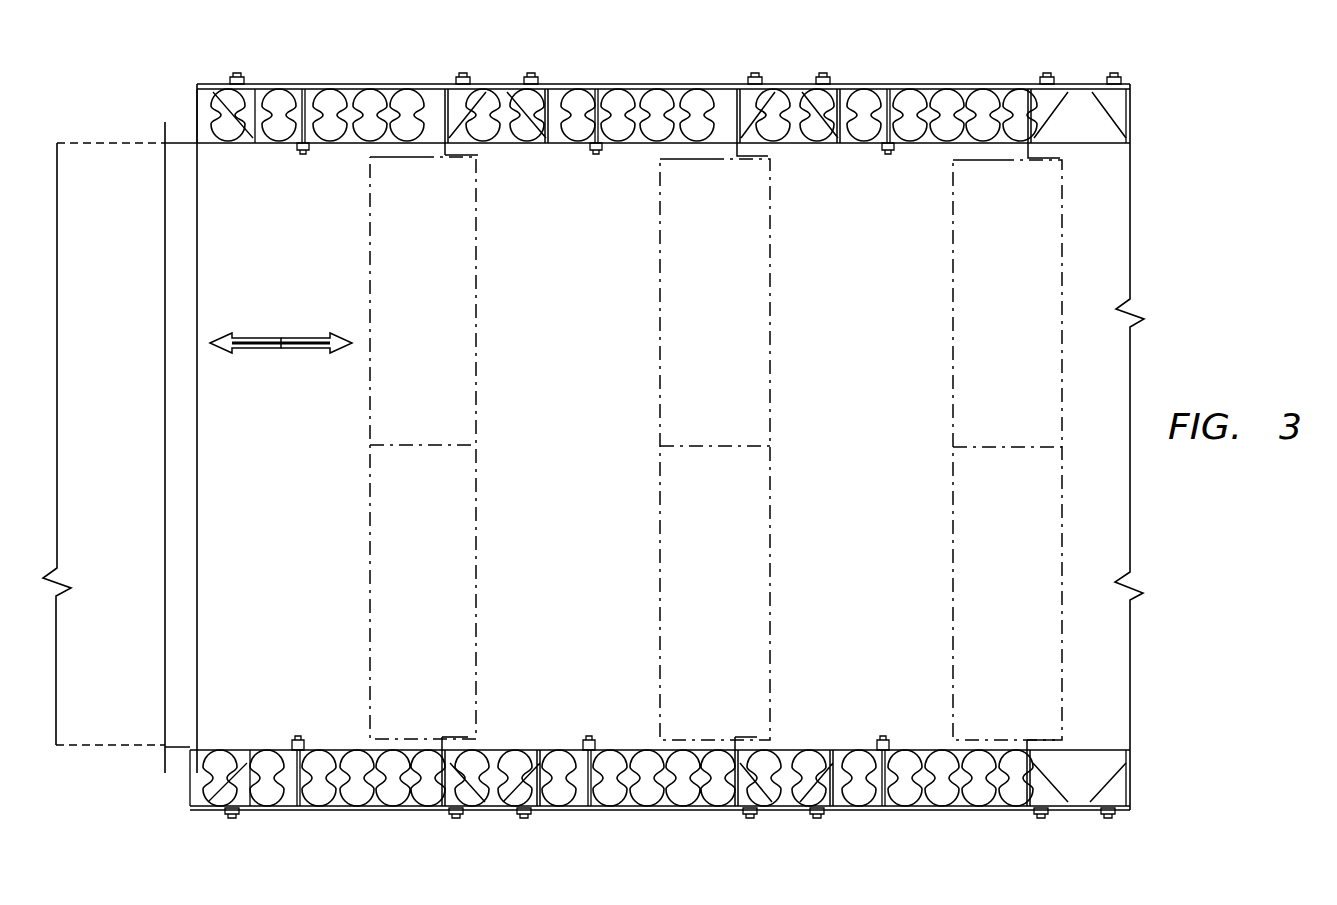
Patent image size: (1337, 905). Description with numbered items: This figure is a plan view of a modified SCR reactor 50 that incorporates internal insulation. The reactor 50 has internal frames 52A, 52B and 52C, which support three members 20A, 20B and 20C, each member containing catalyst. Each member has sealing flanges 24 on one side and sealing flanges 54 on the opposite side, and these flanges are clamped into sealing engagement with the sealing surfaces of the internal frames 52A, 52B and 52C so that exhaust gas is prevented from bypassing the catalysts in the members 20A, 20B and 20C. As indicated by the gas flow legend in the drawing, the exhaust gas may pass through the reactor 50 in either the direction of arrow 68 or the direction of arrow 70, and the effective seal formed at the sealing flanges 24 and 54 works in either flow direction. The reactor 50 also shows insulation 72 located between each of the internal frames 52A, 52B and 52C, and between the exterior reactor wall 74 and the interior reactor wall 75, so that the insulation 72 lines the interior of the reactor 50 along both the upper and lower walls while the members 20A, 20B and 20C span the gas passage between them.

The SCR reactor 50 is at (446, 66).
The insulation 72 is at (333, 97).
The exterior reactor wall 74 is at (888, 88).
The interior reactor wall 75 is at (884, 152).
The internal frame 52A is at (477, 93).
The internal frame 52B is at (766, 92).
The internal frame 52C is at (1058, 95).
The sealing flange 54 is at (470, 152).
The sealing flange 24 is at (470, 742).
The member 20A is at (478, 296).
The member 20B is at (772, 296).
The member 20C is at (952, 296).
The arrow 68 is at (220, 352).
The arrow 70 is at (343, 352).